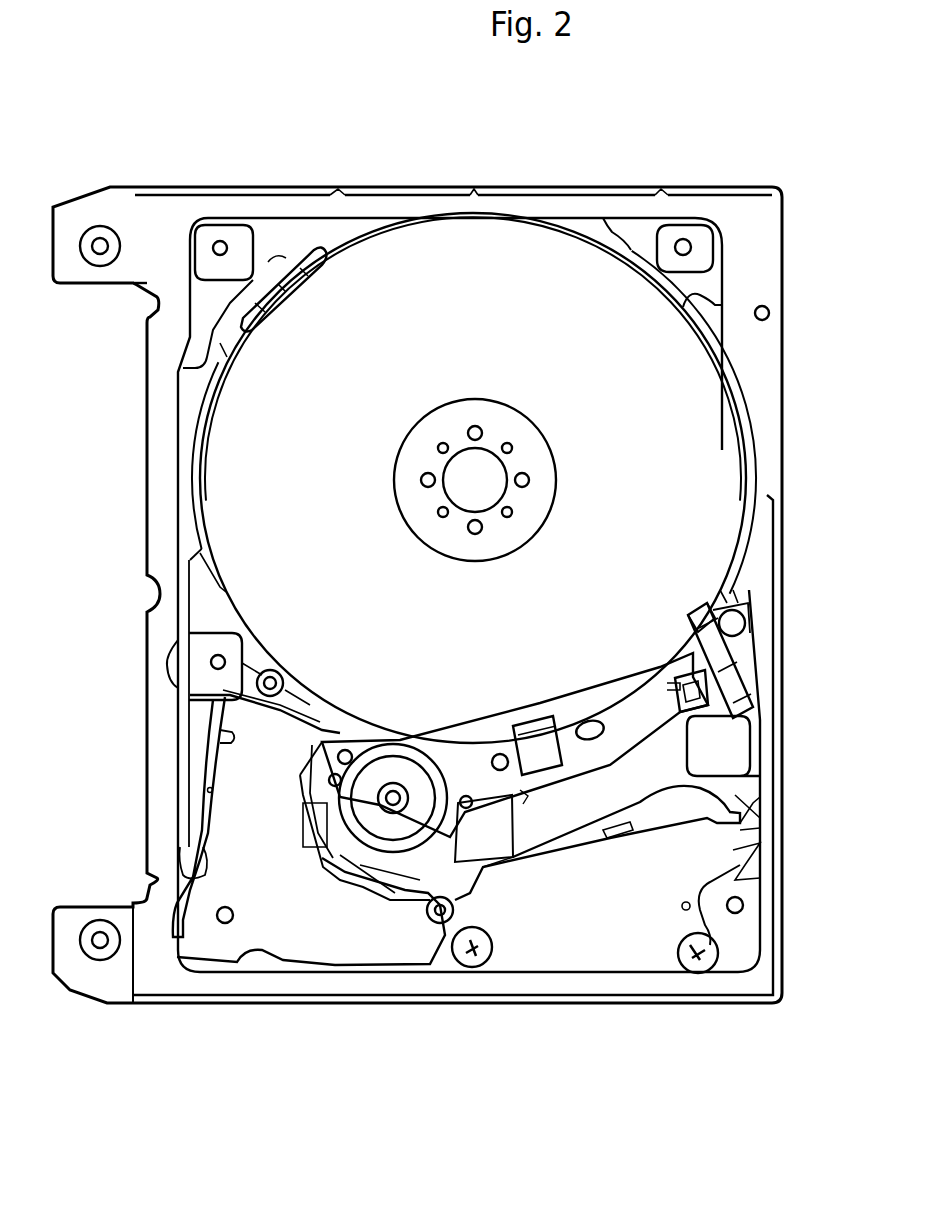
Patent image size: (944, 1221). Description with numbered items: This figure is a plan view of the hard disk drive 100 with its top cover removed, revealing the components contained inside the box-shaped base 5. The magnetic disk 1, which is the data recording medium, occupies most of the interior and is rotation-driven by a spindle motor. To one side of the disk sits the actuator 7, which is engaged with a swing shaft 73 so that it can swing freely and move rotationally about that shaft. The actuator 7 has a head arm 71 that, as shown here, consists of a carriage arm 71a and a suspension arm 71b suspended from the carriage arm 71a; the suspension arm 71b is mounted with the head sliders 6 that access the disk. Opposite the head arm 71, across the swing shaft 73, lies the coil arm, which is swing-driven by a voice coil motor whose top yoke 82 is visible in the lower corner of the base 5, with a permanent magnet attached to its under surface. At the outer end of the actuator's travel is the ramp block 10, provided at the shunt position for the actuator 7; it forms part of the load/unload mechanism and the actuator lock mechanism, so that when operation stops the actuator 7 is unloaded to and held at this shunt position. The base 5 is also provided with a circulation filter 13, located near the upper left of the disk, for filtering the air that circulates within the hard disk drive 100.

The hard disk drive 100 is at (700, 169).
The magnetic disk 1 is at (476, 247).
The base 5 is at (784, 308).
The circulation filter 13 is at (270, 278).
The head sliders 6 is at (670, 683).
The actuator 7 is at (560, 790).
The ramp block 10 is at (743, 652).
The head arm 71 is at (518, 712).
The carriage arm 71a is at (450, 732).
The suspension arm 71b is at (570, 690).
The swing shaft 73 is at (393, 790).
The top yoke 82 is at (350, 947).